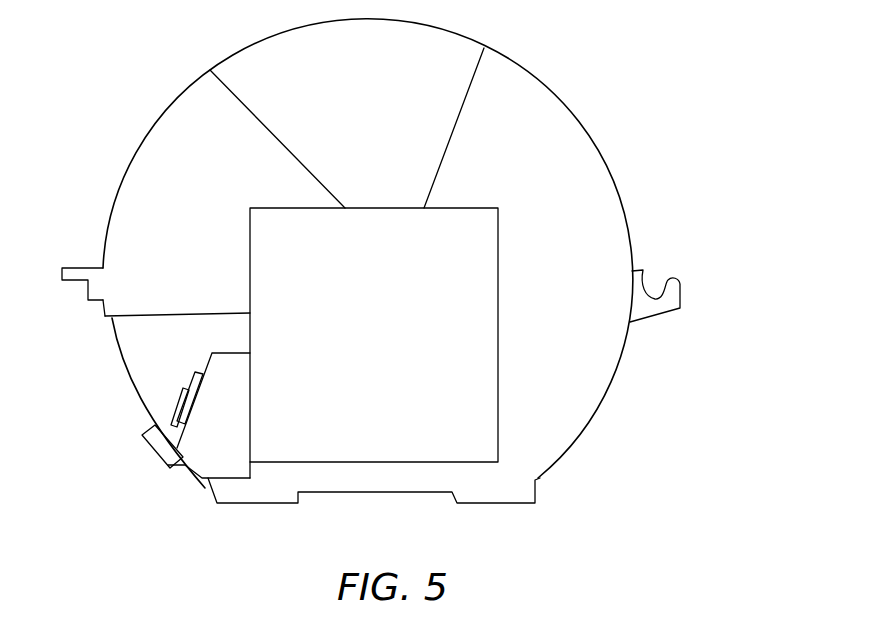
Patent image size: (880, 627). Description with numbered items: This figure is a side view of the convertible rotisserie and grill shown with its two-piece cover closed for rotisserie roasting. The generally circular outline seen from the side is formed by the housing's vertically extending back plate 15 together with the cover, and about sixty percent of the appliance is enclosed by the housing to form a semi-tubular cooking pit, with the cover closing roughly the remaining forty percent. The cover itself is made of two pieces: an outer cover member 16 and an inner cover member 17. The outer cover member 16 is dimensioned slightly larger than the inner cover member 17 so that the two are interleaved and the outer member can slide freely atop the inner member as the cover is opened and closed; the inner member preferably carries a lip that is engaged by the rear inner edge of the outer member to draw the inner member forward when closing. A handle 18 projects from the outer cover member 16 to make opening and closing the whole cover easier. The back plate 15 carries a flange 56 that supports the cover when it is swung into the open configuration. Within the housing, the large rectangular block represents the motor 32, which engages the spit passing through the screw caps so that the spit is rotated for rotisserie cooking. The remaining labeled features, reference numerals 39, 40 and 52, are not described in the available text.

The back plate 15 is at (621, 368).
The outer cover member 16 is at (190, 201).
The inner cover member 17 is at (358, 99).
The handle 18 is at (77, 283).
The motor 32 is at (348, 211).
The third compartment 39 is at (558, 130).
The connector 40 is at (158, 450).
The bottom mounting bracket 52 is at (297, 494).
The flange 56 is at (672, 290).